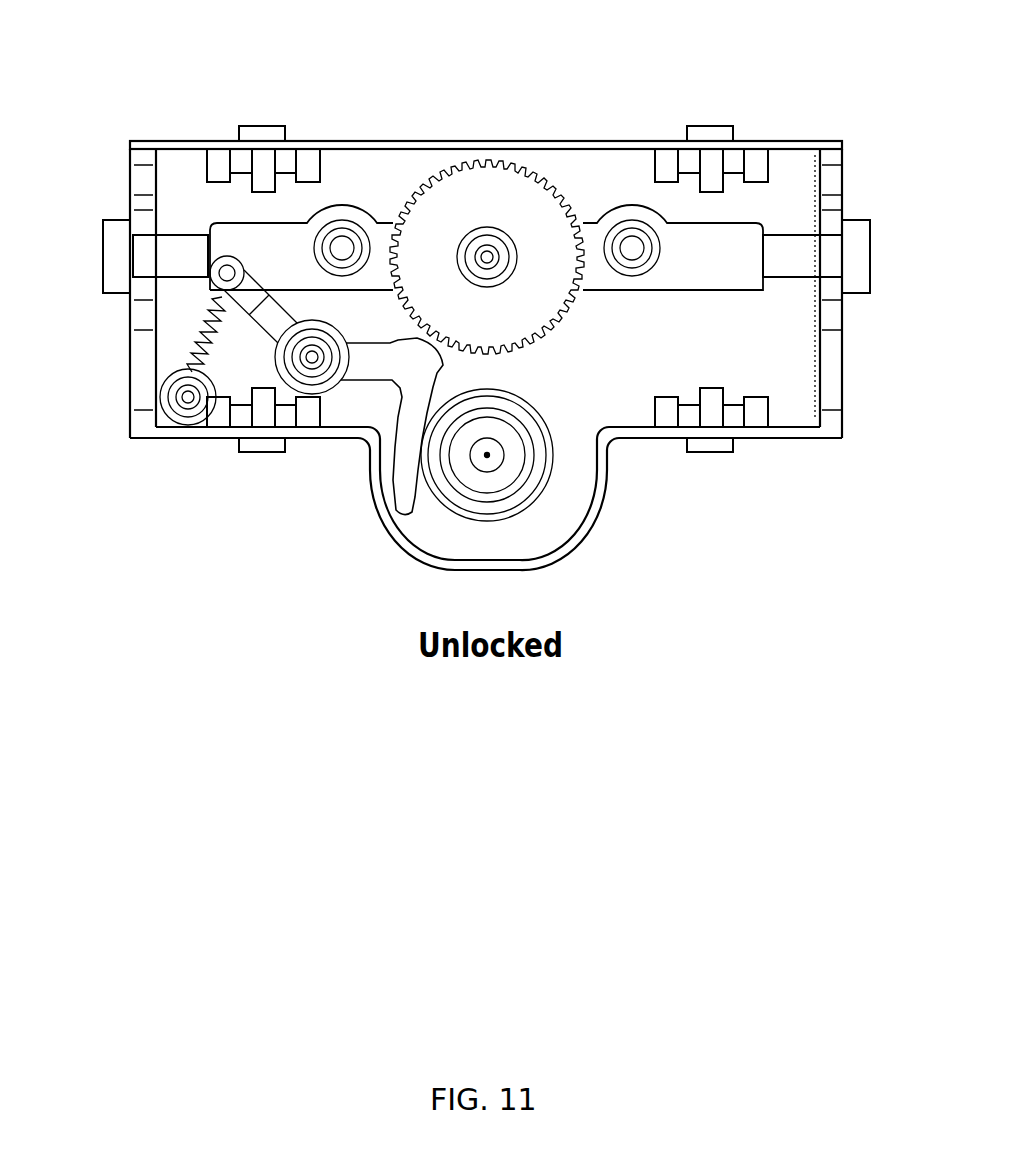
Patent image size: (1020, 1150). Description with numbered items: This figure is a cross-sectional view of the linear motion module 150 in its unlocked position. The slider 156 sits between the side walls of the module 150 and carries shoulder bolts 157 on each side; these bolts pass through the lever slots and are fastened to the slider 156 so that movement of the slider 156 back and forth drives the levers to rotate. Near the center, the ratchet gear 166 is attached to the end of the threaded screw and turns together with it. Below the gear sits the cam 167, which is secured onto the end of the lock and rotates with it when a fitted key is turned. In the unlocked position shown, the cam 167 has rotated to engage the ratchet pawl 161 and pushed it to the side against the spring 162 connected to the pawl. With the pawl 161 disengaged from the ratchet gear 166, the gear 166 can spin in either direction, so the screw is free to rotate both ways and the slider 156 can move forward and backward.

The linear motion module 150 is at (720, 612).
The slider 156 is at (700, 262).
The shoulder bolts 157 is at (117, 250).
The ratchet pawl 161 is at (417, 375).
The spring 162 is at (195, 343).
The ratchet gear 166 is at (491, 217).
The cam 167 is at (487, 455).